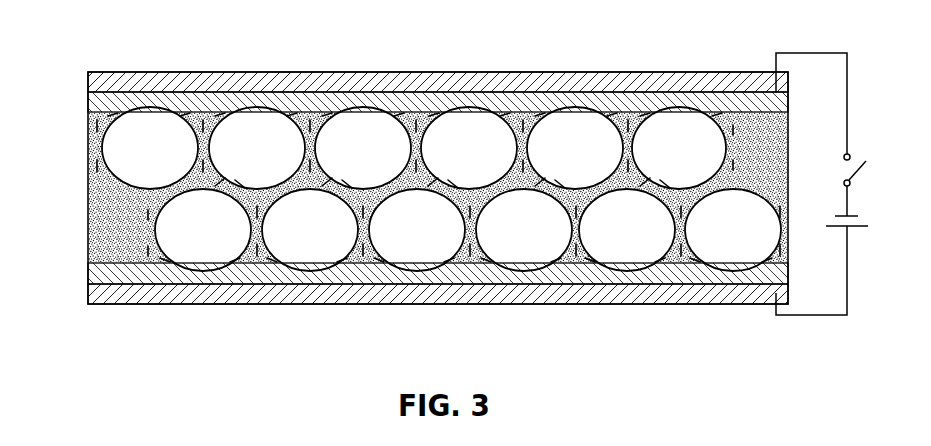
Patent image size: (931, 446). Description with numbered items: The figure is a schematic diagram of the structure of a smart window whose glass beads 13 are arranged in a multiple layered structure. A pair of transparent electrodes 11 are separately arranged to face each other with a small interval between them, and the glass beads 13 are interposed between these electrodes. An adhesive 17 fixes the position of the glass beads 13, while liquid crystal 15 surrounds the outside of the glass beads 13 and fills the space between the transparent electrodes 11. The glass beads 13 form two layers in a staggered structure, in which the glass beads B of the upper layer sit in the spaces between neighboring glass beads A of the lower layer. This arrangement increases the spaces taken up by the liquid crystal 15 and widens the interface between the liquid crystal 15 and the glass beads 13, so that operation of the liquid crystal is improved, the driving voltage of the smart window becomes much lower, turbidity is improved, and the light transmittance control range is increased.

The transparent electrodes 11 is at (88, 83).
The adhesive 17 is at (88, 98).
The liquid crystal 15 is at (88, 203).
The glass beads 13 is at (143, 118).
The glass beads of the upper layer B is at (467, 120).
The glass beads of the lower layer A is at (415, 248).